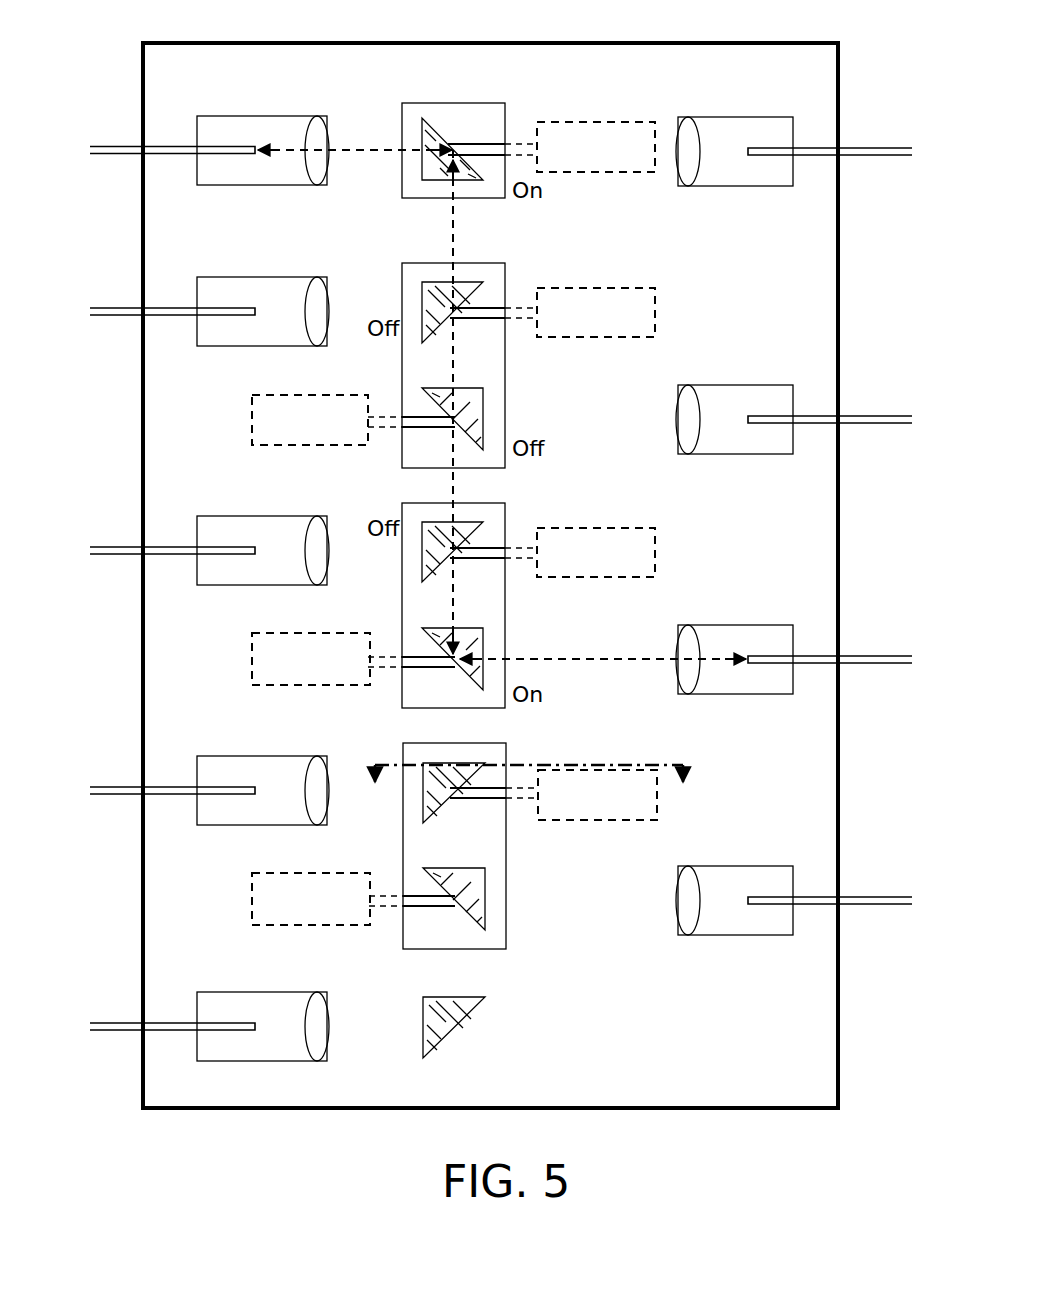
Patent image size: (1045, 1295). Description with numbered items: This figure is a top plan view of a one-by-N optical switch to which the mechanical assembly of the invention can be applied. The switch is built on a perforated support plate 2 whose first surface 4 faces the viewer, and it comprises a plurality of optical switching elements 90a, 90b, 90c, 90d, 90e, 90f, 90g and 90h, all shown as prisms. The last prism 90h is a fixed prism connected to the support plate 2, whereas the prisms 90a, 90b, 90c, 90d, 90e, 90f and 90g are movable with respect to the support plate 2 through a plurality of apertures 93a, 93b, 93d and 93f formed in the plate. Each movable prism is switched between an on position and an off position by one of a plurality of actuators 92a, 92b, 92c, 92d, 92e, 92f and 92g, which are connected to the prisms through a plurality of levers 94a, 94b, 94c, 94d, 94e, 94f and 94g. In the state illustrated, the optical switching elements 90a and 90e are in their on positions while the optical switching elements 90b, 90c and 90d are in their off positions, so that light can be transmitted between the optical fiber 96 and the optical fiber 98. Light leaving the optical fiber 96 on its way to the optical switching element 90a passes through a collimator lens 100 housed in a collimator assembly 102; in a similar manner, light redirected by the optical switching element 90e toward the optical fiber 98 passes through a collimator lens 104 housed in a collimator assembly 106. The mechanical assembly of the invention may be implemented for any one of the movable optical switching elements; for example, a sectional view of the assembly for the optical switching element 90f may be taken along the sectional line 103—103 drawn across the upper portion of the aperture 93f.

The perforated support plate 2 is at (632, 46).
The first surface 4 is at (805, 532).
The optical switching element 90a is at (432, 132).
The optical switching element 90b is at (470, 277).
The optical switching element 90c is at (478, 415).
The optical switching element 90d is at (480, 520).
The optical switching element 90e is at (475, 648).
The optical switching element 90f is at (440, 800).
The optical switching element 90g is at (488, 905).
The fixed prism 90h is at (458, 1025).
The actuator 92a is at (598, 125).
The actuator 92b is at (600, 295).
The actuator 92c is at (252, 420).
The actuator 92d is at (615, 530).
The actuator 92e is at (307, 688).
The actuator 92f is at (608, 822).
The actuator 92g is at (318, 926).
The aperture 93a is at (411, 198).
The aperture 93b is at (487, 370).
The aperture 93d is at (497, 615).
The aperture 93f is at (493, 865).
The lever 94a is at (490, 140).
The lever 94b is at (487, 320).
The lever 94c is at (420, 432).
The lever 94d is at (490, 560).
The lever 94e is at (412, 655).
The lever 94f is at (490, 800).
The lever 94g is at (415, 895).
The optical fiber 96 is at (115, 153).
The optical fiber 98 is at (882, 656).
The collimator lens 100 is at (320, 186).
The collimator assembly 102 is at (255, 190).
The sectional line 103 is at (532, 797).
The collimator lens 104 is at (676, 656).
The collimator assembly 106 is at (745, 640).